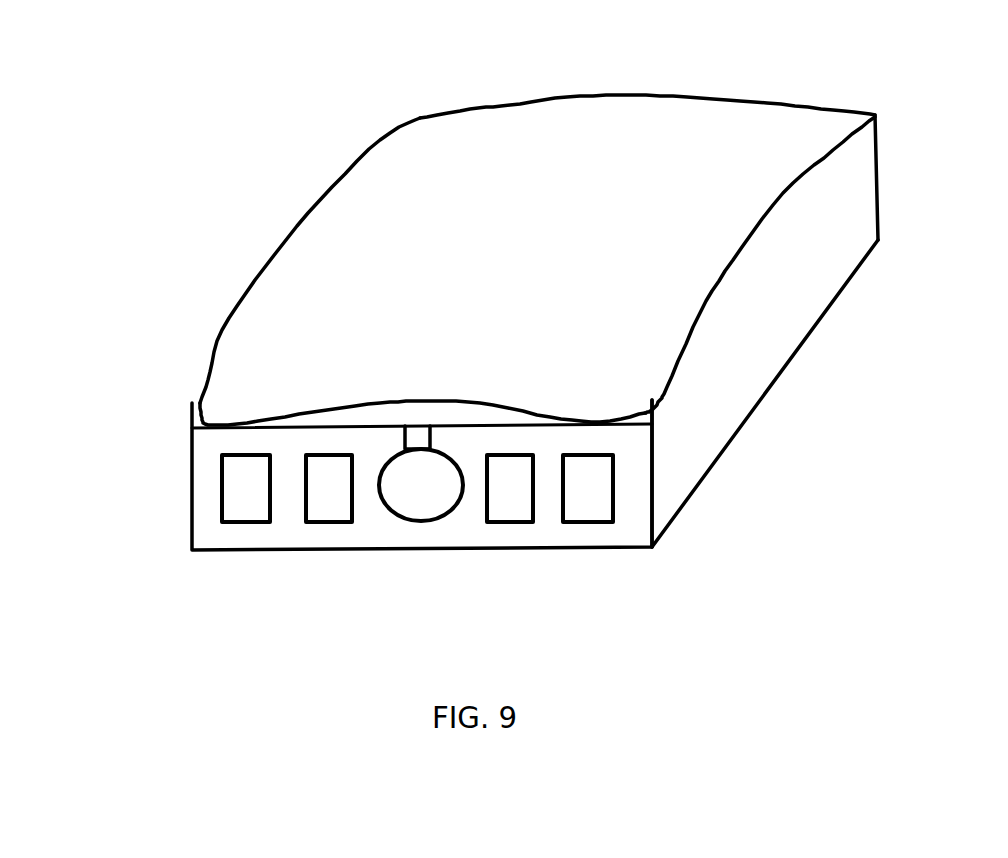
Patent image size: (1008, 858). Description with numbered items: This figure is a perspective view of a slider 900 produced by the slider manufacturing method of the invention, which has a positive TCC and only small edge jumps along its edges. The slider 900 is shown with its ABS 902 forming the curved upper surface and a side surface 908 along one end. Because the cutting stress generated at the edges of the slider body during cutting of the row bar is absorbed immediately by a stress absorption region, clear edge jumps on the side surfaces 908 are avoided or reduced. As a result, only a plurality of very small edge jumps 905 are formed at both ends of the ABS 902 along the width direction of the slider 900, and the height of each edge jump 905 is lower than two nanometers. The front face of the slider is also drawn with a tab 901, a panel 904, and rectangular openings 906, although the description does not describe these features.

The device housing 900 is at (208, 173).
The connector 901 is at (413, 435).
The curved top surface 902 is at (450, 185).
The front panel 904 is at (210, 515).
The edge 905 is at (655, 415).
The opening 906 is at (265, 490).
The side panel 908 is at (733, 358).